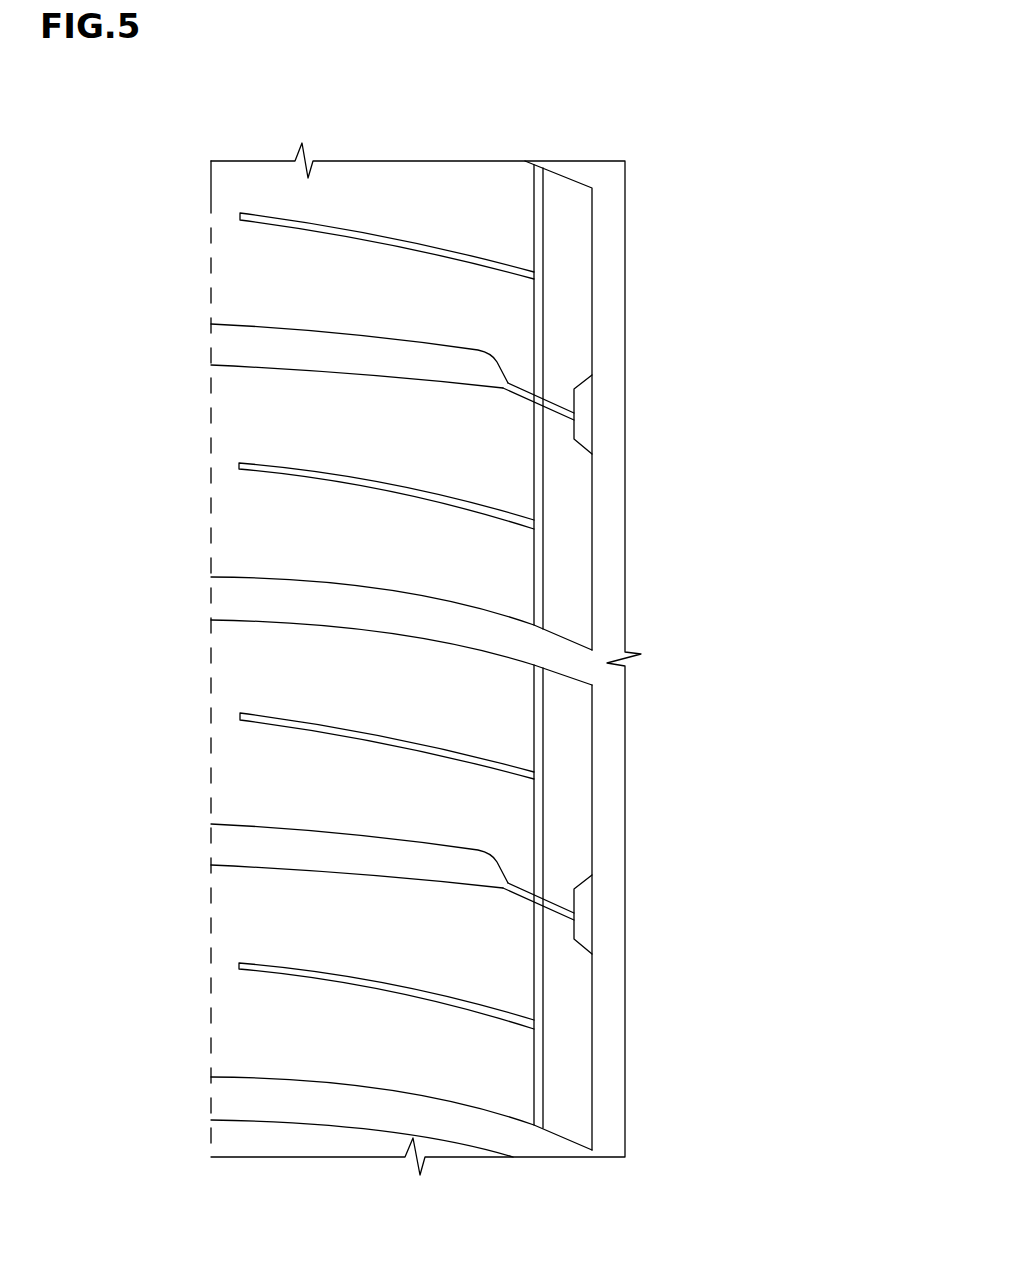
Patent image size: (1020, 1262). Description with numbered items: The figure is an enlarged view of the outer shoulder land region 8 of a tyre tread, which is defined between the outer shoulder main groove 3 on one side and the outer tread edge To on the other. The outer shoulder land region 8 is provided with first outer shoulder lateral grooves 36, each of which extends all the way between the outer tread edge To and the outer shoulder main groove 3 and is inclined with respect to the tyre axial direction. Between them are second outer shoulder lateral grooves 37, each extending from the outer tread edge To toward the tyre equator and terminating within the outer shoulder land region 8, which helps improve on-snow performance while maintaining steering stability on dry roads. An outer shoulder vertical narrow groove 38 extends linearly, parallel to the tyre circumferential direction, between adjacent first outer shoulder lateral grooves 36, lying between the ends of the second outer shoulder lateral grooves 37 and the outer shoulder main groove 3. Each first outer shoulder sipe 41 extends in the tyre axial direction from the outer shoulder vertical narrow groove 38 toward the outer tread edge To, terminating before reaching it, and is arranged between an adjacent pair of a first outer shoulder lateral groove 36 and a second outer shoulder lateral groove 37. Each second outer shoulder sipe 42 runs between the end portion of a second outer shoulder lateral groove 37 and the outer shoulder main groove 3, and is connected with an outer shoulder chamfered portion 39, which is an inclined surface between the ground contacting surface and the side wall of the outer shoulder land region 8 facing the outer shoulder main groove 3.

The outer shoulder land region 8 is at (387, 193).
The outer shoulder main groove 3 is at (604, 203).
The outer tread edge To is at (211, 187).
The outer shoulder vertical narrow groove 38 is at (522, 227).
The second outer shoulder lateral groove 37 is at (311, 350).
The first outer shoulder lateral groove 36 is at (311, 600).
The first outer shoulder sipe 41 is at (471, 492).
The second outer shoulder sipe 42 is at (560, 390).
The outer shoulder chamfered portion 39 is at (591, 400).